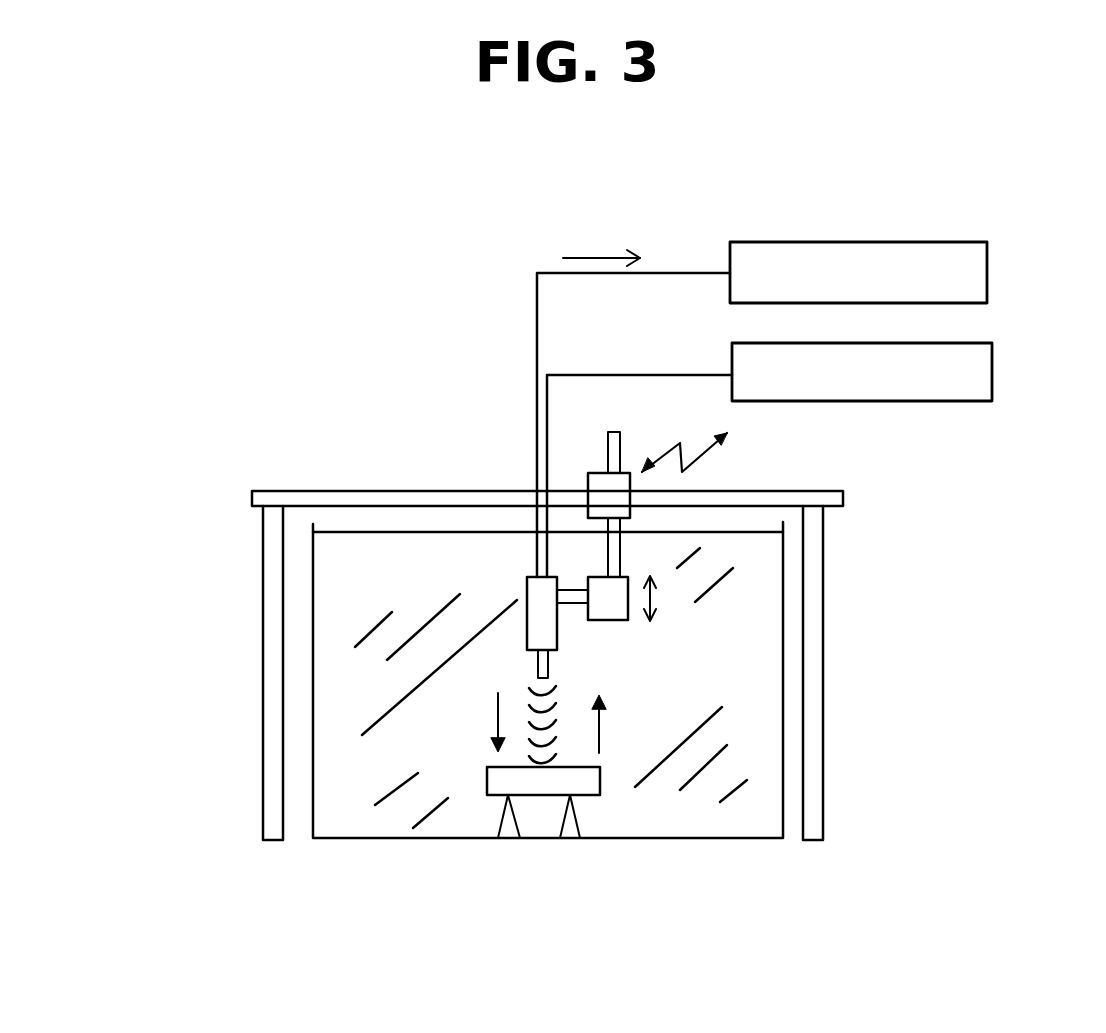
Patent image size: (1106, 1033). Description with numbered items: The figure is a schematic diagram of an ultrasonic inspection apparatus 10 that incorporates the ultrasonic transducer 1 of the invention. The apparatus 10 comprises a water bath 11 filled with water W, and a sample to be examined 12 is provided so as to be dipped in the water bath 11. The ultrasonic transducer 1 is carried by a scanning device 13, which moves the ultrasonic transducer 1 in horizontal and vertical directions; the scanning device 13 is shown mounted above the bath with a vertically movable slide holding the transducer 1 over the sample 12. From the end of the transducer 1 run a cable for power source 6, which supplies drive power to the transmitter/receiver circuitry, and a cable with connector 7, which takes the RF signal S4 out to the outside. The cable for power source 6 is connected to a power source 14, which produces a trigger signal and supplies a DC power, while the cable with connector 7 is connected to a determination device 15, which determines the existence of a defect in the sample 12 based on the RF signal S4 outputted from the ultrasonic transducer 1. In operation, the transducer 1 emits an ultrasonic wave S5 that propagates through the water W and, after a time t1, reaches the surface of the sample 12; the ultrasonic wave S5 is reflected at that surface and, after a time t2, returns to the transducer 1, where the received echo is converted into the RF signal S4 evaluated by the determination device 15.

The ultrasonic inspection apparatus 10 is at (308, 355).
The ultrasonic transducer 1 is at (527, 596).
The cable for power source 6 is at (672, 375).
The cable with connector 7 is at (692, 273).
The water bath 11 is at (313, 668).
The sample to be examined 12 is at (588, 782).
The scanning device 13 is at (698, 475).
The power source 14 is at (992, 352).
The determination device 15 is at (987, 252).
The RF signal S4 is at (603, 259).
The ultrasonic wave S5 is at (548, 722).
The time t1 is at (477, 722).
The time t2 is at (627, 724).
The water W is at (747, 823).